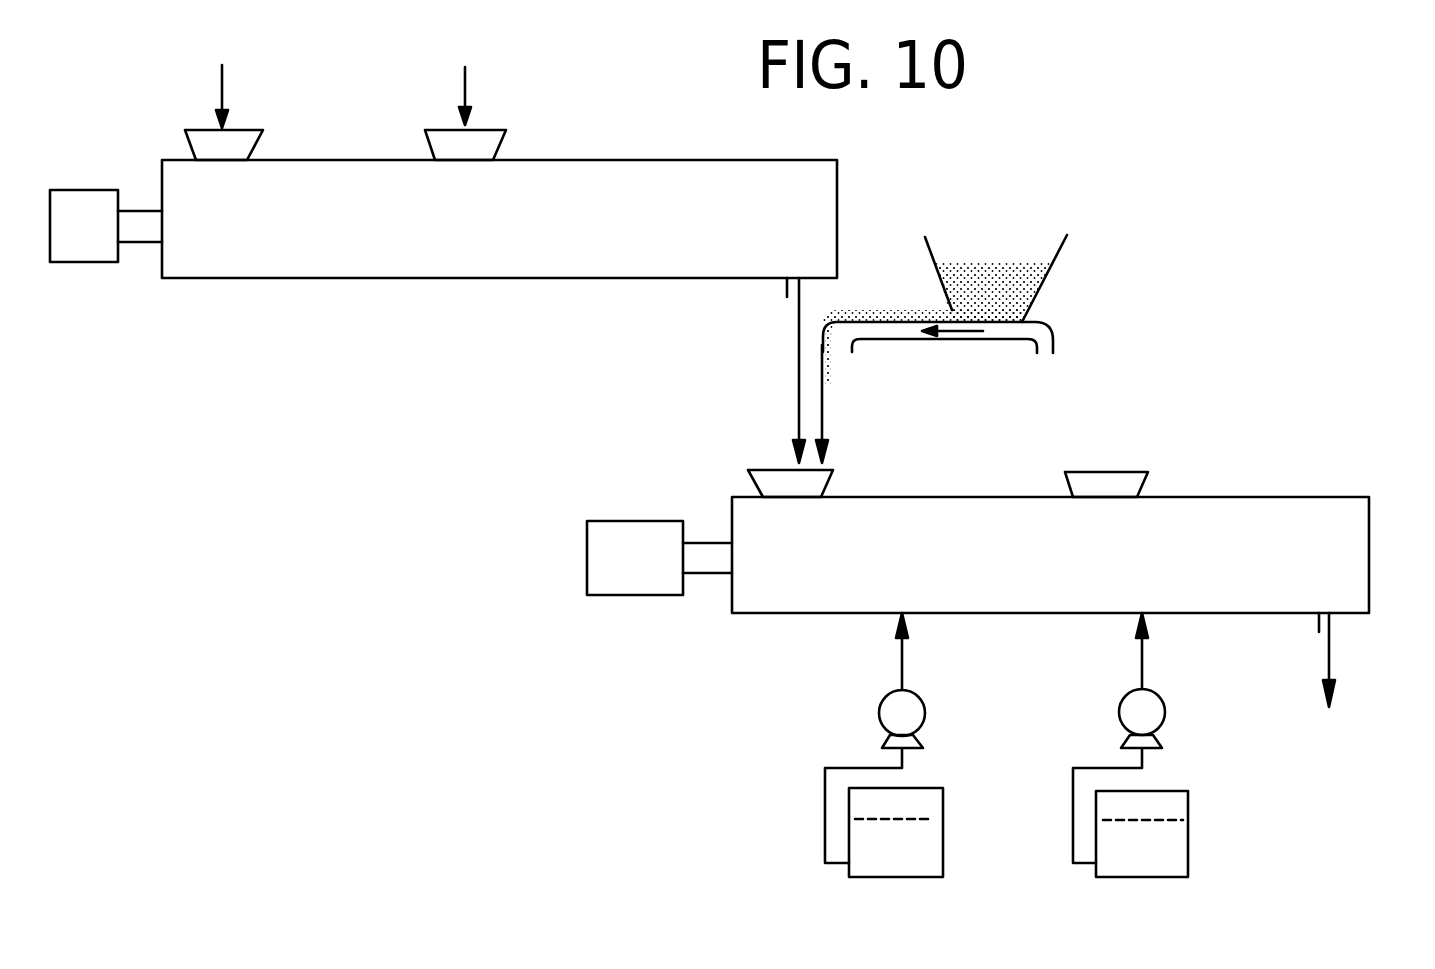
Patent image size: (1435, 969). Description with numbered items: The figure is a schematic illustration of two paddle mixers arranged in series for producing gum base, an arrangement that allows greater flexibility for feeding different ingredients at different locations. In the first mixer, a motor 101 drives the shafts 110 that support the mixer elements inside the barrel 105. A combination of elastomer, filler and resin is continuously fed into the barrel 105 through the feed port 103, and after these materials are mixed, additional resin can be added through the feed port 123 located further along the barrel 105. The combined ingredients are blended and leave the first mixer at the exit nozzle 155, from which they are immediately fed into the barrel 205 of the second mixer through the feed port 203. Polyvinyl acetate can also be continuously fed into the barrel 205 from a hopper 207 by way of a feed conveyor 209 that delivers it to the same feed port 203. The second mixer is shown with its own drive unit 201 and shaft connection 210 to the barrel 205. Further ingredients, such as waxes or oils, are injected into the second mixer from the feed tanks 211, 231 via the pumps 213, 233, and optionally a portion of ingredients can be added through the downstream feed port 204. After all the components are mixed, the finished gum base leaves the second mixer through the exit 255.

The motor 101 is at (98, 239).
The feed port 103 is at (245, 136).
The barrel 105 is at (327, 177).
The shafts 110 is at (137, 218).
The feed port 123 is at (488, 137).
The exit nozzle 155 is at (815, 282).
The drive motor 201 is at (655, 567).
The feed port 203 is at (807, 481).
The downstream feed port 204 is at (1123, 480).
The barrel 205 is at (927, 510).
The hopper 207 is at (1063, 243).
The feed conveyor 209 is at (1043, 338).
The drive shaft 210 is at (702, 543).
The feed tank 211 is at (943, 807).
The pump 213 is at (912, 715).
The feed tank 231 is at (1188, 800).
The pump 233 is at (1147, 715).
The exit 255 is at (1340, 616).